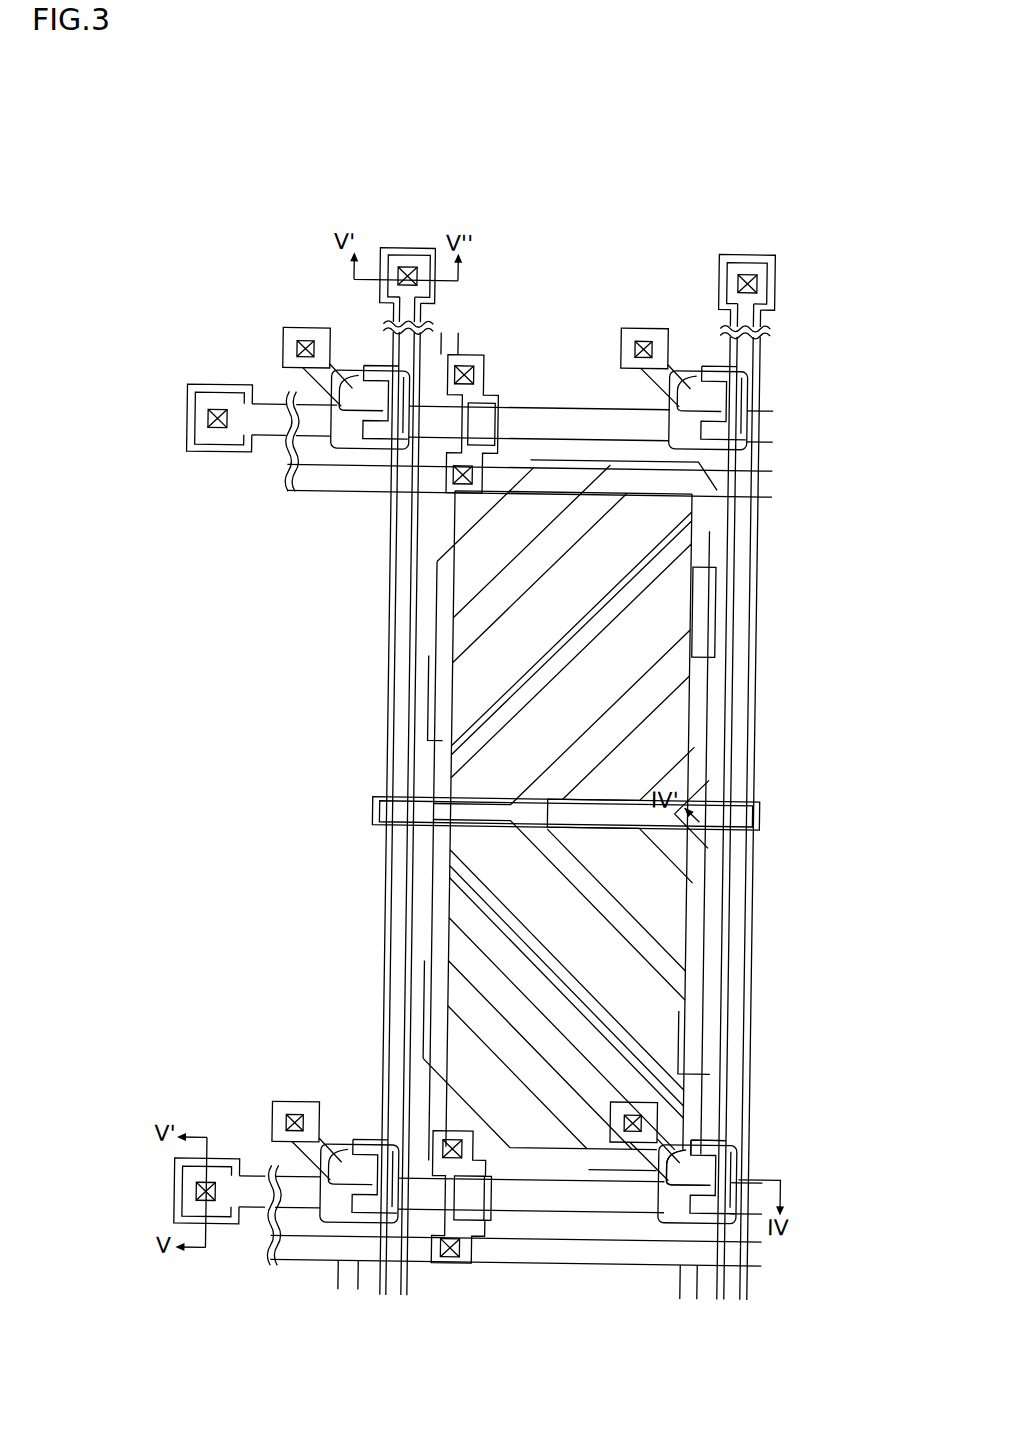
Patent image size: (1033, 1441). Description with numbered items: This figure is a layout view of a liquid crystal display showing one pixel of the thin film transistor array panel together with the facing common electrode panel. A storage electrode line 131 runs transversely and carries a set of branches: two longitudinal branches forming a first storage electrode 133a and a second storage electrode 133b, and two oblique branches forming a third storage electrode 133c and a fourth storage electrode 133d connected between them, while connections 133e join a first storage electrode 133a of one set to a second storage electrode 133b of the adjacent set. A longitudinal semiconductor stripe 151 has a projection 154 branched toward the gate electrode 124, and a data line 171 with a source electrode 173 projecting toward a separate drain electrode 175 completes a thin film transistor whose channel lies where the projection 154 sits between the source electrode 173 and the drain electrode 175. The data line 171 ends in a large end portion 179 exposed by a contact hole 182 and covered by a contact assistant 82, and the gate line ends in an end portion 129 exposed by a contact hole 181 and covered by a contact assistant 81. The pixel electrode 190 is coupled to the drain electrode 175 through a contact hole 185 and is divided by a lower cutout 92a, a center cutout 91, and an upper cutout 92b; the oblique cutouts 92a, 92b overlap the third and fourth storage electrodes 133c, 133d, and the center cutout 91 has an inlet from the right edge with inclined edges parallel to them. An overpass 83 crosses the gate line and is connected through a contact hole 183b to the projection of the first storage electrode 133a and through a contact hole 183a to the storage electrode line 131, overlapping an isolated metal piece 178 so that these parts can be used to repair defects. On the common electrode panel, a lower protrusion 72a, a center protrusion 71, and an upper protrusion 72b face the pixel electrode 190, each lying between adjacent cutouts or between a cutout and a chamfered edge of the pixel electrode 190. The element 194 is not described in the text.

The center protrusion 71 is at (525, 786).
The lower protrusion 72a is at (512, 1016).
The upper protrusion 72b is at (472, 598).
The contact assistant 81 is at (236, 1226).
The contact assistant 82 is at (398, 250).
The overpass 83 is at (500, 1232).
The center cutout 91 is at (633, 832).
The lower cutout 92a is at (530, 911).
The upper cutout 92b is at (580, 610).
The gate electrode 124 is at (676, 1215).
The end portion of gate line 129 is at (194, 1210).
The storage electrode line 131 is at (510, 466).
The first storage electrode 133a is at (446, 686).
The second storage electrode 133b is at (712, 676).
The third storage electrode 133c is at (640, 568).
The fourth storage electrode 133d is at (540, 970).
The connection 133e is at (748, 797).
The semiconductor stripe 151 is at (398, 752).
The projection of semiconductor stripe 154 is at (668, 1214).
The data line 171 is at (396, 874).
The source electrode 173 is at (702, 1208).
The drain electrode 175 is at (607, 1153).
The isolated metal piece 178 is at (458, 1192).
The end portion of data line 179 is at (419, 255).
The contact hole 181 is at (207, 1193).
The contact hole 182 is at (420, 278).
The contact hole 183a is at (466, 1256).
The contact hole 183b is at (462, 1140).
The contact hole 185 is at (640, 1118).
The pixel electrode 190 is at (578, 1190).
The storage bridge connection 194 is at (474, 356).